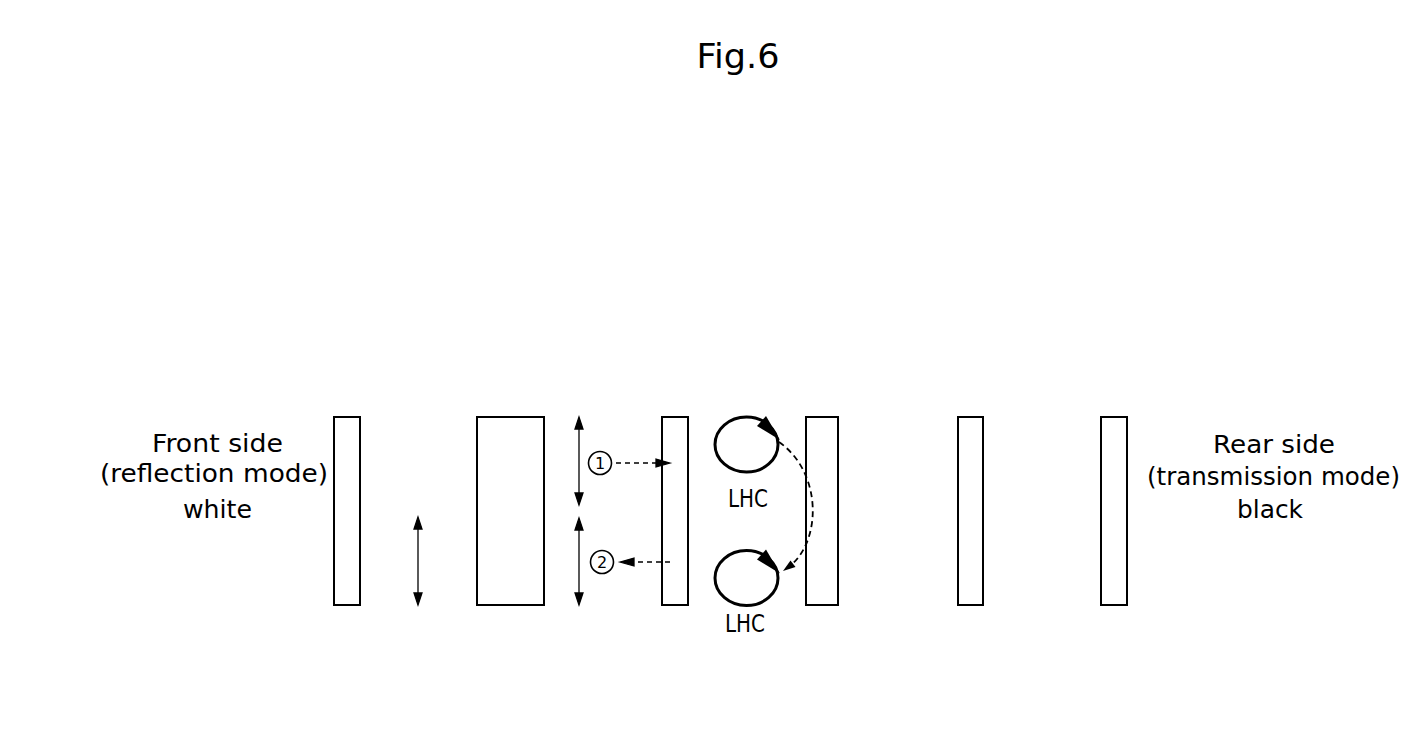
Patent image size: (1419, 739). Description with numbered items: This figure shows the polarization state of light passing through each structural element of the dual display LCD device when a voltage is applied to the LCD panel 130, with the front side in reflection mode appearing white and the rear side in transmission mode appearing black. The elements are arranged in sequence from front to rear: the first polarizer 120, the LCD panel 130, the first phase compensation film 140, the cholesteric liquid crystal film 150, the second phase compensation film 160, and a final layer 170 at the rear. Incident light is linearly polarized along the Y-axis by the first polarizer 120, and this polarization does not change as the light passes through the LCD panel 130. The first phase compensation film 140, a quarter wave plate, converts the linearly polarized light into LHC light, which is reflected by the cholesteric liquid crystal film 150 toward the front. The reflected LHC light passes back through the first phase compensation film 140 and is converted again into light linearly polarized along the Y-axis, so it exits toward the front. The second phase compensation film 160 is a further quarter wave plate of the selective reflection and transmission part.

The first polarizer 120 is at (344, 417).
The LCD panel 130 is at (511, 417).
The first phase compensation film 140 is at (675, 417).
The cholesteric liquid crystal (CLC) film 150 is at (822, 417).
The second phase compensation film 160 is at (970, 417).
The rear polarizer 170 is at (1115, 417).